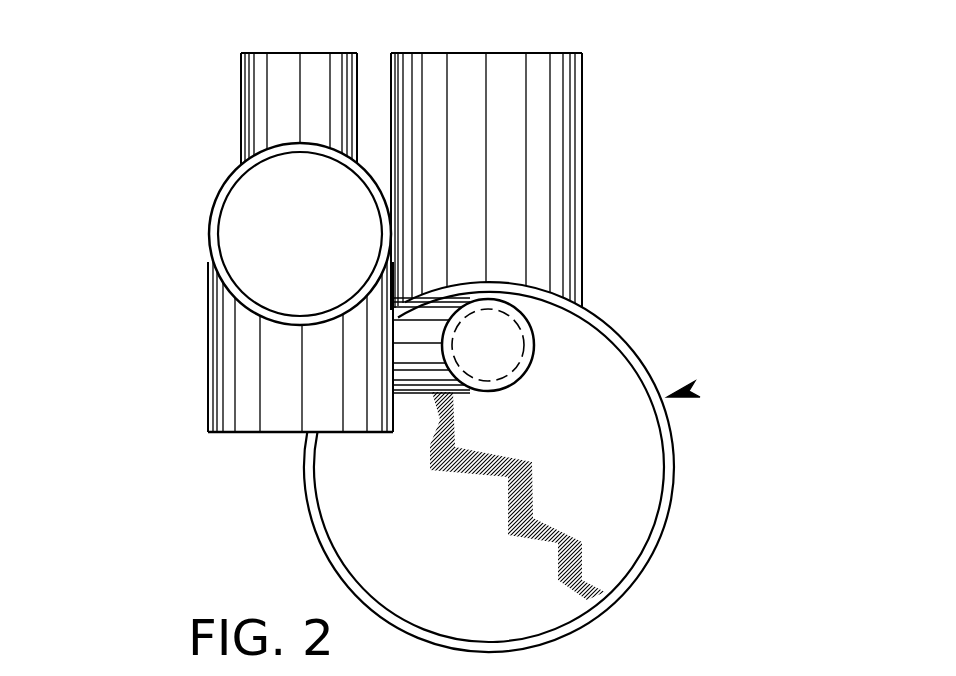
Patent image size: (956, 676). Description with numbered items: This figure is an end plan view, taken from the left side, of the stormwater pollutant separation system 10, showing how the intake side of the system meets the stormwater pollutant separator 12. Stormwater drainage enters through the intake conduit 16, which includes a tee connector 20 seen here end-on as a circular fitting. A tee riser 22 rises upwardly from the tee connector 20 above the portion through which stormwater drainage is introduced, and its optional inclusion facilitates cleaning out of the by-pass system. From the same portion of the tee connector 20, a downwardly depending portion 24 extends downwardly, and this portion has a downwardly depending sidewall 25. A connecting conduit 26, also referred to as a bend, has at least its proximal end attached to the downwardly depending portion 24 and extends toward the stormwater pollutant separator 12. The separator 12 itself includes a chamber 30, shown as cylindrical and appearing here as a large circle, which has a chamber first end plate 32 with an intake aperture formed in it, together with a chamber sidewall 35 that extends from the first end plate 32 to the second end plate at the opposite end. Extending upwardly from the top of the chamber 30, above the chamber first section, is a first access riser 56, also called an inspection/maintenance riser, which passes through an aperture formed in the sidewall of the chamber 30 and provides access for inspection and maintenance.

The stormwater pollutant separation system 10 is at (655, 275).
The stormwater pollutant separator 12 is at (689, 391).
The intake conduit 16 is at (222, 237).
The tee connector 20 is at (207, 197).
The tee riser 22 is at (262, 104).
The downwardly depending portion 24 is at (232, 355).
The downwardly depending sidewall 25 is at (208, 402).
The connecting conduit 26 is at (428, 368).
The chamber 30 is at (676, 462).
The chamber first end plate 32 is at (618, 530).
The chamber sidewall 35 is at (622, 348).
The first access riser 56 is at (593, 142).